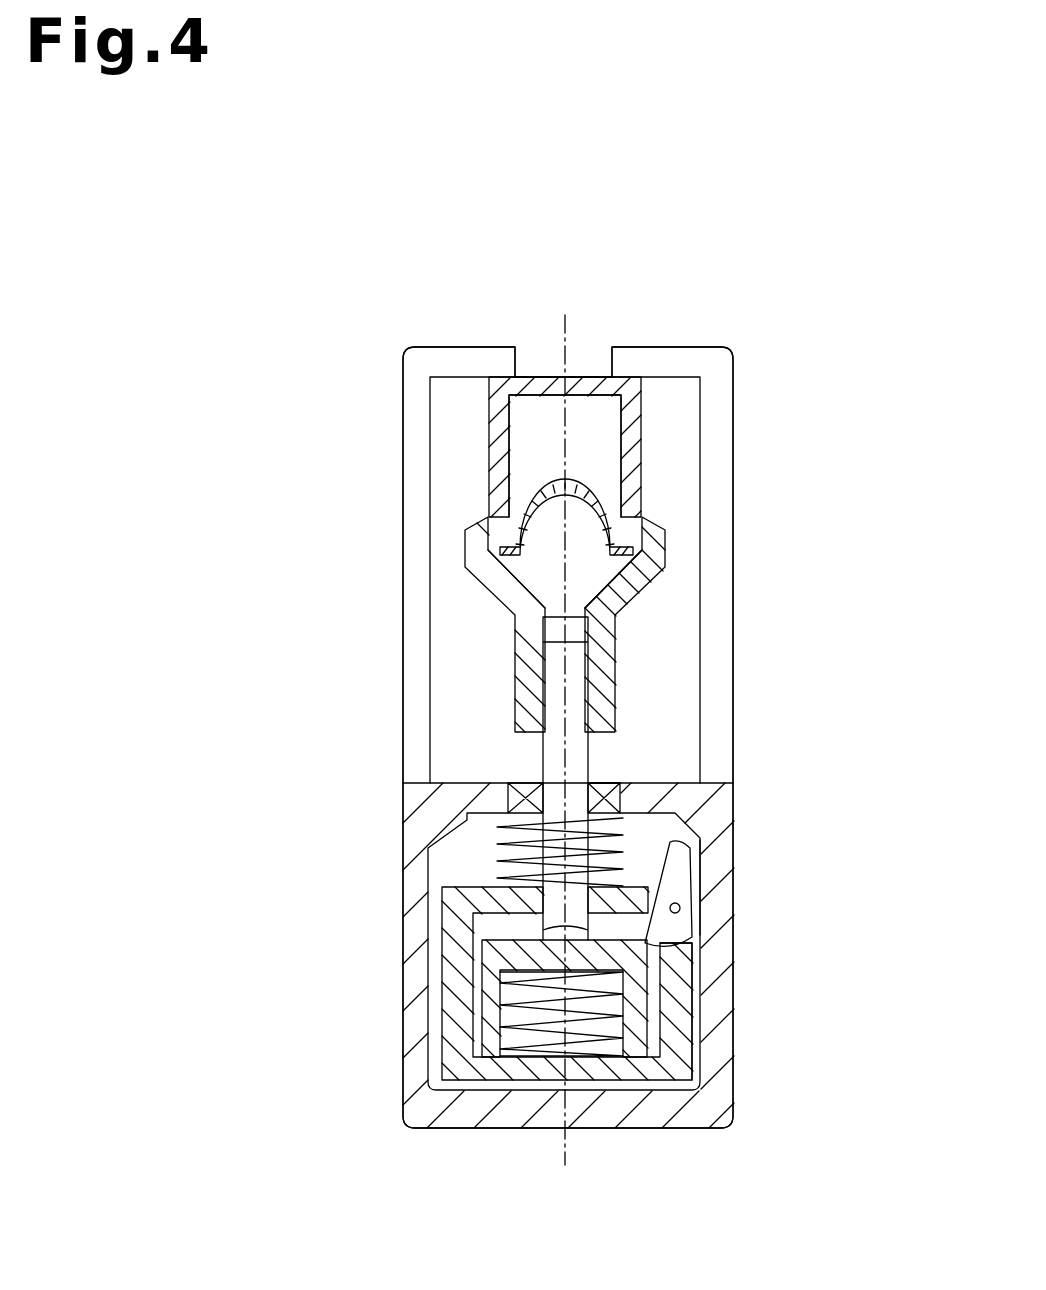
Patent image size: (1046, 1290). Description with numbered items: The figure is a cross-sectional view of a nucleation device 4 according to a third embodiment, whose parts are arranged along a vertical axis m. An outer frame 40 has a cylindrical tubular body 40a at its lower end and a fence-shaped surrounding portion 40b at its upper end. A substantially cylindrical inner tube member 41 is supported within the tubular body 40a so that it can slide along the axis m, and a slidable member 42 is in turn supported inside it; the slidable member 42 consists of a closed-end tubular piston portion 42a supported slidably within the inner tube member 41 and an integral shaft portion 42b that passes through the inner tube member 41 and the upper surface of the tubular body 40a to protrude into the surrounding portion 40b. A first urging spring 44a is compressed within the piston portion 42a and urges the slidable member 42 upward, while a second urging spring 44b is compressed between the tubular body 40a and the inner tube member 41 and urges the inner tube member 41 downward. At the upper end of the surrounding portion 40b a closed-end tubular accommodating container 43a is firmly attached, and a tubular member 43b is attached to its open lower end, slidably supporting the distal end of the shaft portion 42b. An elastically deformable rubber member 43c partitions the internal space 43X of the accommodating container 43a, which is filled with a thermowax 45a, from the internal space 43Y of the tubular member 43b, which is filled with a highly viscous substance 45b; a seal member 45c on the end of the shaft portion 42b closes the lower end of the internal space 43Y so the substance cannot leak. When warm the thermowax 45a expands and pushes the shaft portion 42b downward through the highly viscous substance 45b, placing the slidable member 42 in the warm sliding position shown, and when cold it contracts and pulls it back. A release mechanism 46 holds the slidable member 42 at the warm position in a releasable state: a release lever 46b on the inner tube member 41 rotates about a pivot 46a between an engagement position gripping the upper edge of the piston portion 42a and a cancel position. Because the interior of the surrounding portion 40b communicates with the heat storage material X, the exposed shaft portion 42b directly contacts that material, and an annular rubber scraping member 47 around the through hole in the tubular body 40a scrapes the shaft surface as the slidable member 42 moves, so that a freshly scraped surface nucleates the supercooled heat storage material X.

The nucleation device 4 is at (590, 302).
The outer frame 40 is at (746, 765).
The cylindrical tubular body 40a is at (736, 1002).
The fence-shaped surrounding portion 40b is at (733, 668).
The inner tube member 41 is at (690, 968).
The slidable member 42 is at (666, 1018).
The tubular piston portion 42a is at (475, 987).
The shaft portion 42b is at (540, 768).
The tubular accommodating container 43a is at (641, 453).
The tubular member 43b is at (498, 600).
The elastically deformable rubber member 43c is at (590, 490).
The internal space 43X is at (523, 418).
The internal space 43Y is at (527, 569).
The first urging spring 44a is at (623, 1045).
The second urging spring 44b is at (622, 830).
The thermowax 45a is at (610, 417).
The highly viscous substance 45b is at (605, 560).
The seal member 45c is at (571, 628).
The release mechanism 46 is at (714, 845).
The pivot 46a is at (681, 904).
The release lever 46b is at (702, 862).
The annular rubber scraping member 47 is at (607, 783).
The heat storage material X is at (860, 606).
The axis m is at (565, 1152).